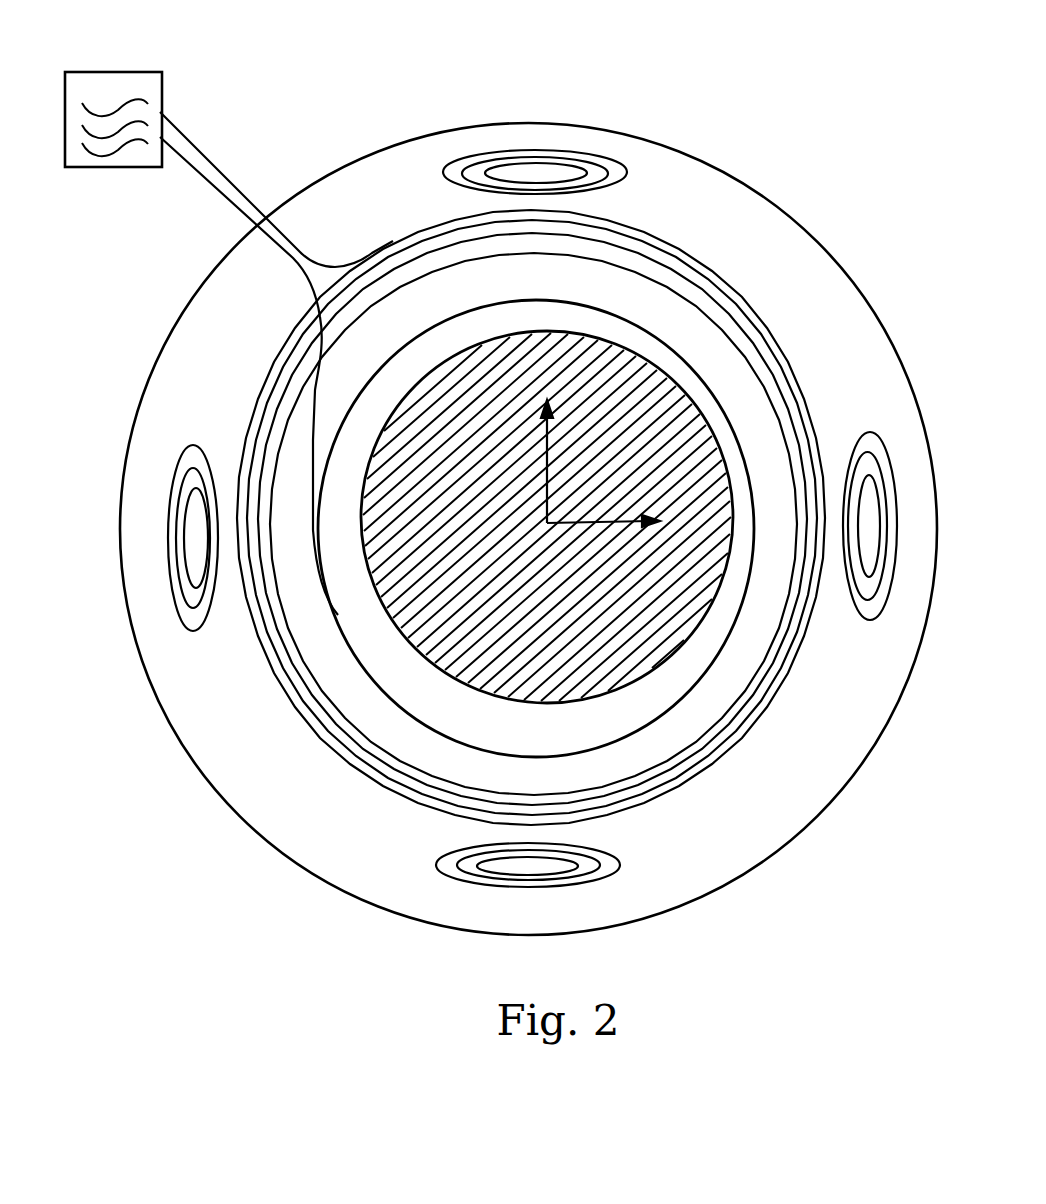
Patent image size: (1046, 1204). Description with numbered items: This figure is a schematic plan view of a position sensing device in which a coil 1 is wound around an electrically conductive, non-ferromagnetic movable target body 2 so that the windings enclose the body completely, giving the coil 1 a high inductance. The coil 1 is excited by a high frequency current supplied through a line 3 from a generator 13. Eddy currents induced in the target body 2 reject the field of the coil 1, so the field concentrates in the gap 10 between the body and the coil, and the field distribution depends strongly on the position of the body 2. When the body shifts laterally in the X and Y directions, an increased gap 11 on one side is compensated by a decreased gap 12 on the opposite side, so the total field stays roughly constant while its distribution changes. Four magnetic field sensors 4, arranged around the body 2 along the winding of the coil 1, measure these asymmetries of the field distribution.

The coil 1 is at (735, 745).
The target body 2 is at (655, 385).
The line 3 is at (213, 148).
The magnetic field sensors 4 is at (565, 172).
The gap 10 is at (415, 690).
The increased gap 11 is at (331, 498).
The decreased gap 12 is at (742, 490).
The generator 13 is at (143, 85).